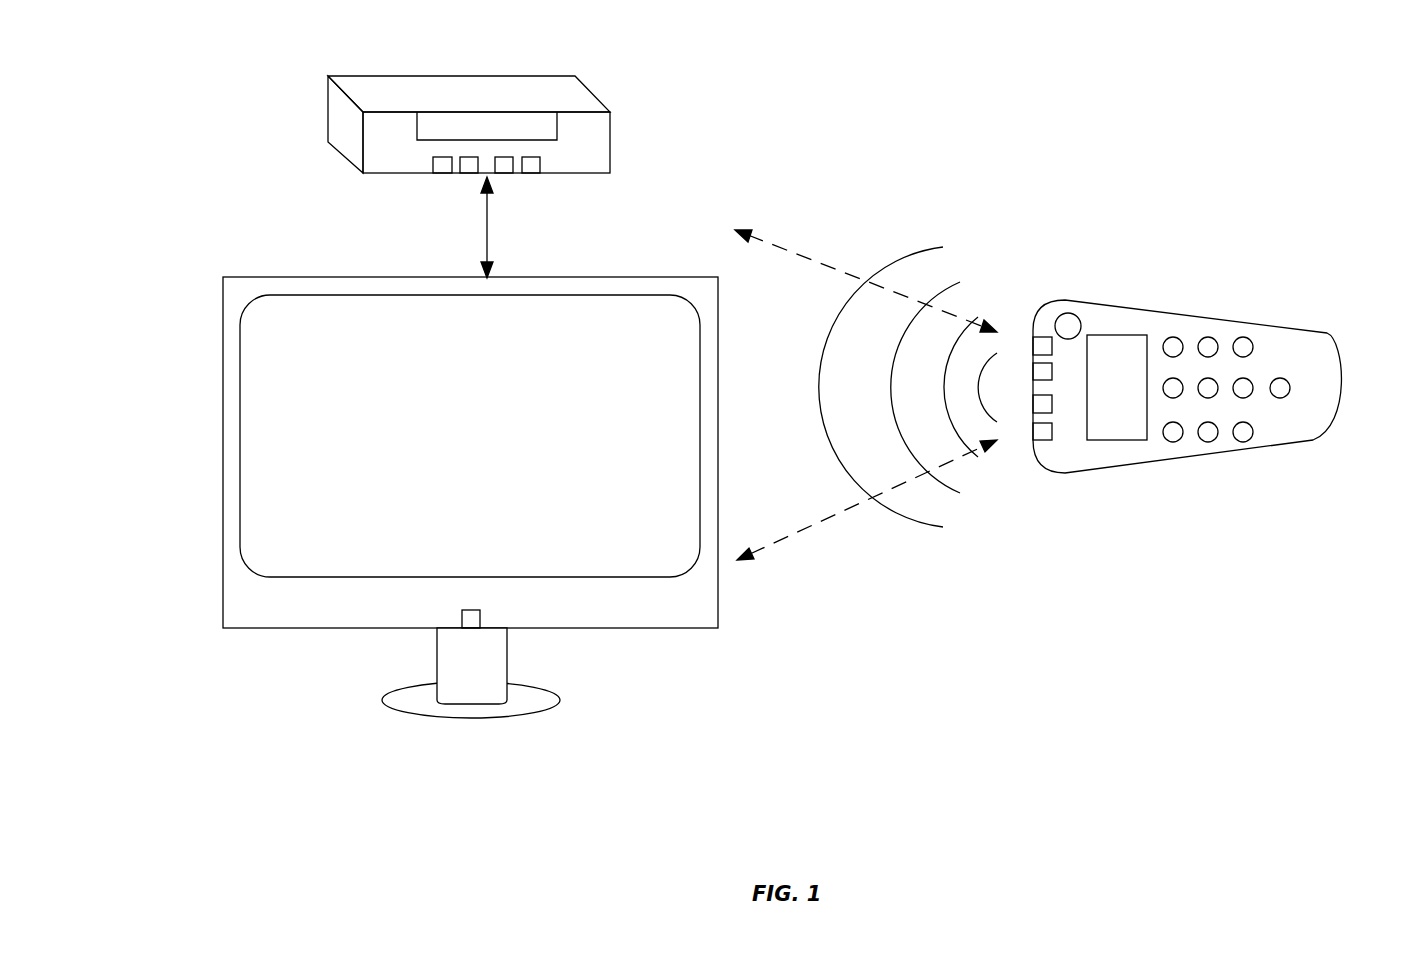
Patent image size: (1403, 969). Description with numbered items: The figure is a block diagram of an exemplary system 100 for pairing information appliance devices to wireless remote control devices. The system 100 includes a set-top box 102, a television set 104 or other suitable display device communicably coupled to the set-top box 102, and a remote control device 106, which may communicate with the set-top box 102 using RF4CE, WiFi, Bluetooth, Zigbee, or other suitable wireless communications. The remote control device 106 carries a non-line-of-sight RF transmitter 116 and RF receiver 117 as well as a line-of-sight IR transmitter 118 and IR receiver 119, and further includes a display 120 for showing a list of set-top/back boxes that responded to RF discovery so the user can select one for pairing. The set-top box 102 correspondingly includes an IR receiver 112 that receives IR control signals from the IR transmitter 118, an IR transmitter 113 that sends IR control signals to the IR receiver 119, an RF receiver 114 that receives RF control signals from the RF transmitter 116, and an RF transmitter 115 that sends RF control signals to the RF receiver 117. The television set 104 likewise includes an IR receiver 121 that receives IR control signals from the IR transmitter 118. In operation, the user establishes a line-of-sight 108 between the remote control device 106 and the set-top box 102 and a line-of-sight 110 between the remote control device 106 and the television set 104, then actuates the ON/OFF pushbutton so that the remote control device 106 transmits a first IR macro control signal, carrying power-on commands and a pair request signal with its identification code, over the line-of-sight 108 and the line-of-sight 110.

The system 100 is at (990, 40).
The set-top box 102 is at (505, 159).
The television set 104 is at (431, 487).
The remote control device 106 is at (1160, 390).
The line-of-sight 108 is at (810, 258).
The line-of-sight 110 is at (817, 520).
The IR receiver 112 is at (443, 175).
The IR transmitter 113 is at (469, 175).
The RF receiver 114 is at (528, 175).
The RF transmitter 115 is at (505, 175).
The RF transmitter 116 is at (1033, 372).
The RF receiver 117 is at (1033, 345).
The IR transmitter 118 is at (1033, 405).
The IR receiver 119 is at (1033, 430).
The display 120 is at (1134, 401).
The IR receiver 121 is at (470, 610).